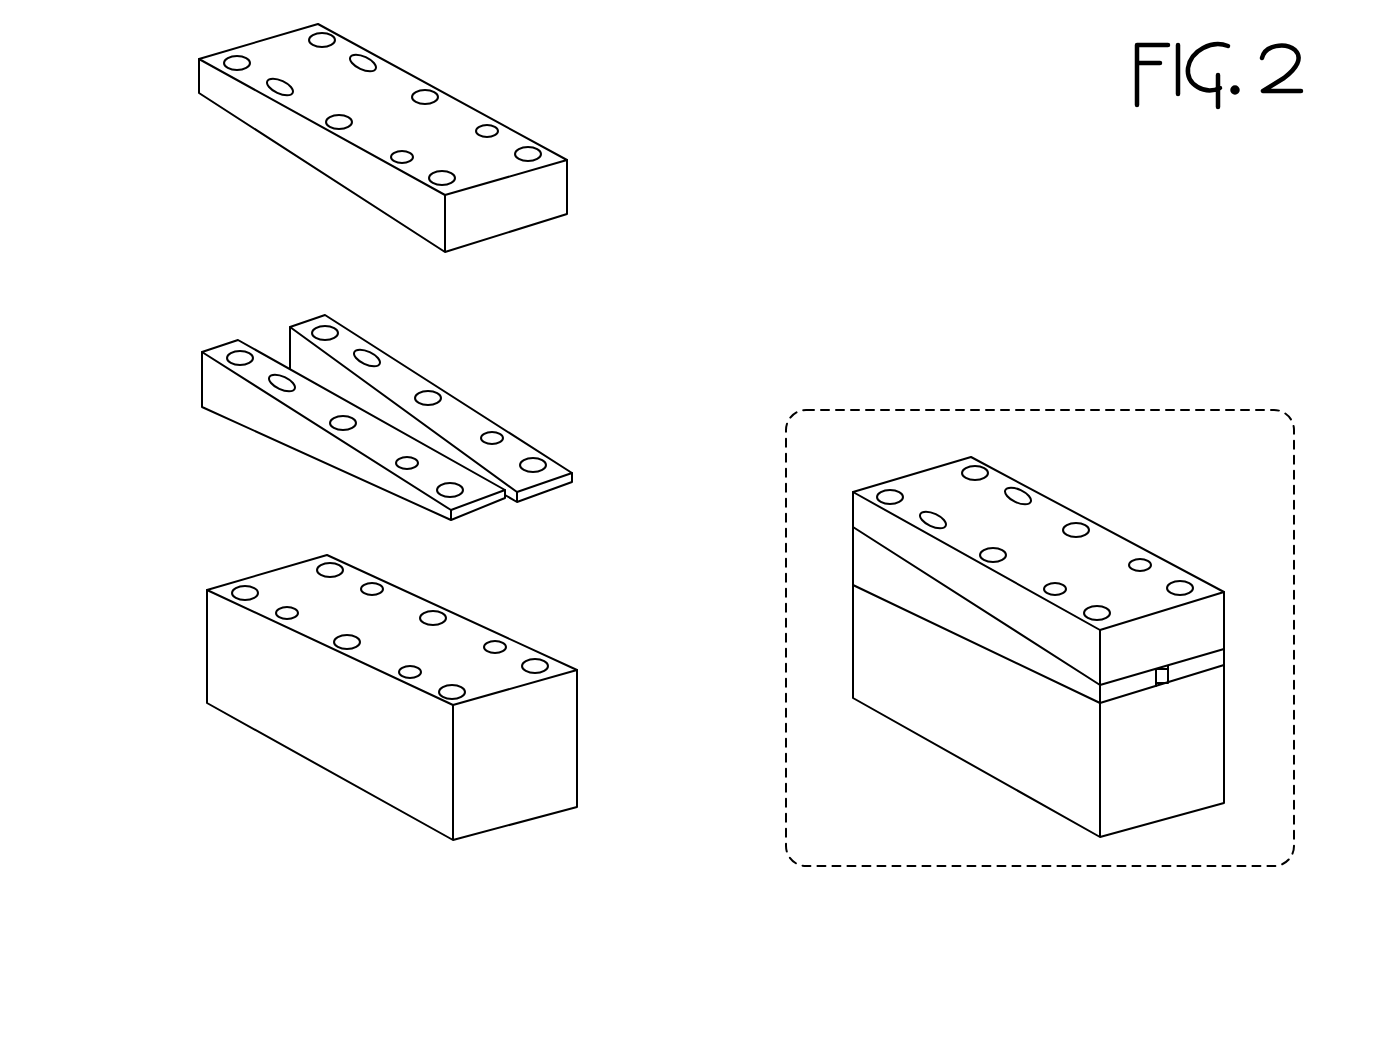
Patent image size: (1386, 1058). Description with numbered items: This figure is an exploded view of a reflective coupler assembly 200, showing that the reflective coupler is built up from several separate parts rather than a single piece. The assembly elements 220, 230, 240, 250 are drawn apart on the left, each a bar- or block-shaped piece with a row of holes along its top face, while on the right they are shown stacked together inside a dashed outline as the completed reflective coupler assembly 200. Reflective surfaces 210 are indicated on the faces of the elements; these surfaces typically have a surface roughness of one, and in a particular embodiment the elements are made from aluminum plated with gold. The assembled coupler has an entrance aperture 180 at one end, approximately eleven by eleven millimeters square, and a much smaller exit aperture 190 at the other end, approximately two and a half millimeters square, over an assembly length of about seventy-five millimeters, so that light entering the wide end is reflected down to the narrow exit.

The entrance aperture 180 is at (852, 550).
The exit aperture 190 is at (1163, 684).
The reflective coupler assembly 200 is at (1040, 612).
The reflective surfaces 210 is at (512, 220).
The assembly element 220 is at (387, 105).
The assembly element 230 is at (340, 719).
The assembly element 240 is at (255, 408).
The assembly element 250 is at (473, 408).